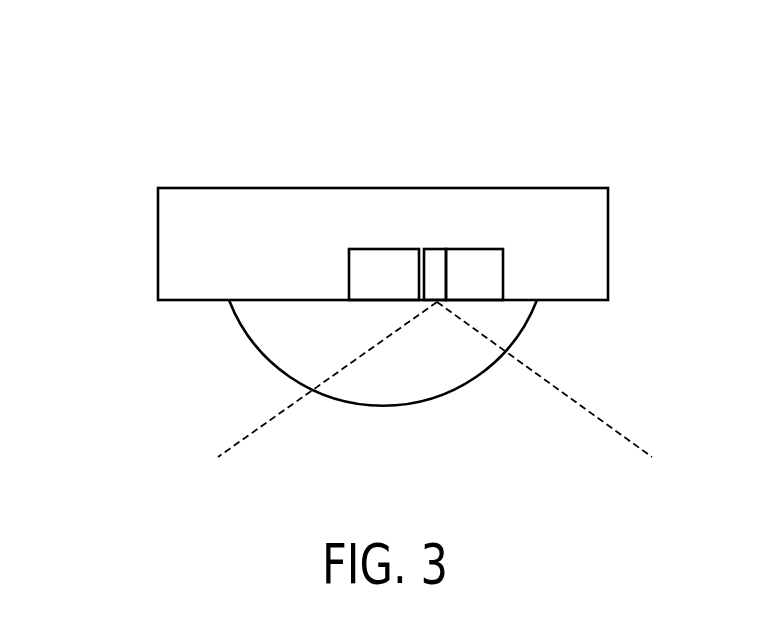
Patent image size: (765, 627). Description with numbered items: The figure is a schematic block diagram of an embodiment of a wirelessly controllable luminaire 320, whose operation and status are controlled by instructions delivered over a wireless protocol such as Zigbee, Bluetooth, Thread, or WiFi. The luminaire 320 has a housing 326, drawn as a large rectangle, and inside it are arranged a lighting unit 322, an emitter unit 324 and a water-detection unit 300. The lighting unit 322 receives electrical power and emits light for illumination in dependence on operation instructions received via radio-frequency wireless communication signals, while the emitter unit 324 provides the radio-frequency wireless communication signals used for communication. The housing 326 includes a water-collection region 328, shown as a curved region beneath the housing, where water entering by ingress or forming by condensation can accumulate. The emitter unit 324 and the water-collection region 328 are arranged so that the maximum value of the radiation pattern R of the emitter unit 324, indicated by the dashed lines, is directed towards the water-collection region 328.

The wirelessly controllable luminaire 320 is at (88, 122).
The housing 326 is at (158, 233).
The lighting unit 322 is at (392, 249).
The emitter unit 324 is at (434, 249).
The water-detection unit 300 is at (483, 249).
The water-collection region 328 is at (247, 352).
The radiation pattern R is at (612, 406).